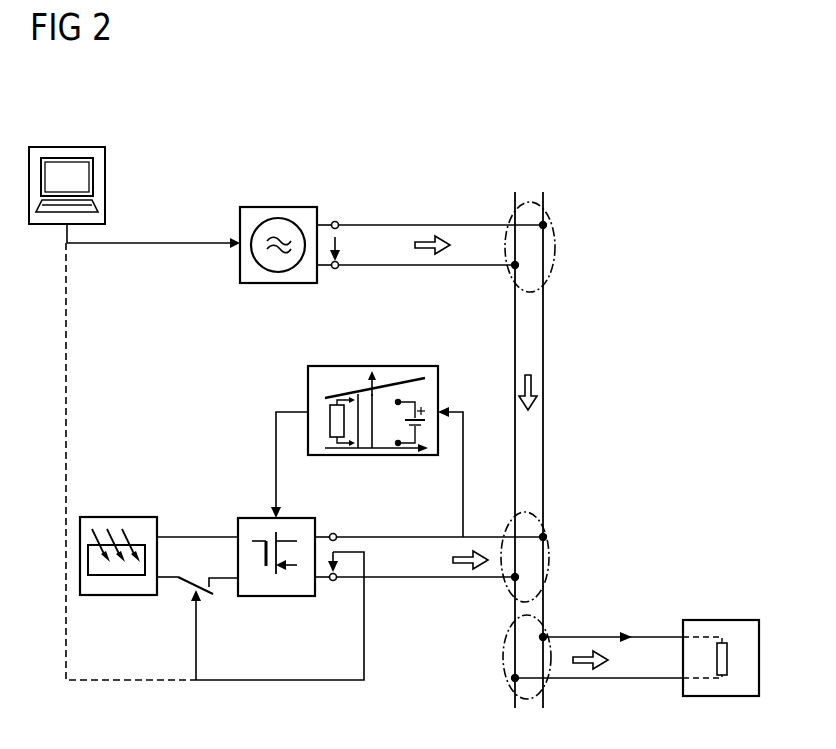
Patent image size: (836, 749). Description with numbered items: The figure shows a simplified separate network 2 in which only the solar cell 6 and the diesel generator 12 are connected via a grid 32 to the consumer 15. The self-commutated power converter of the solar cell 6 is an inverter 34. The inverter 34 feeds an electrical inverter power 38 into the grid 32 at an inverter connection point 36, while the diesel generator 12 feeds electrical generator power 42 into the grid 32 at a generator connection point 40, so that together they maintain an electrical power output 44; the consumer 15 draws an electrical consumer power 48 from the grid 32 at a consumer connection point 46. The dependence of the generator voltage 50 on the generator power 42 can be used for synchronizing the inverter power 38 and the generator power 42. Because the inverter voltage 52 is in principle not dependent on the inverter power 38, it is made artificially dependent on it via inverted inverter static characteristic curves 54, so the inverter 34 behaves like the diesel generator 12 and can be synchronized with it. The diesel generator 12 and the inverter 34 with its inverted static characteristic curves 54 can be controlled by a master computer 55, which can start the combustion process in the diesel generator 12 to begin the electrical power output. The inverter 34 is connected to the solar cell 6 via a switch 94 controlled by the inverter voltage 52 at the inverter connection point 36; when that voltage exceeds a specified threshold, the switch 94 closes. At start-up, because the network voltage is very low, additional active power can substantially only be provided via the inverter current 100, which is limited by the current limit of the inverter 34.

The separate network 2 is at (608, 156).
The solar cell 6 is at (118, 517).
The diesel generator 12 is at (272, 207).
The consumer 15 is at (722, 620).
The grid 32 is at (544, 325).
The inverter 34 is at (278, 597).
The inverter connection point 36 is at (552, 565).
The inverter power 38 is at (463, 568).
The generator connection point 40 is at (556, 250).
The generator power 42 is at (427, 238).
The electrical power output 44 is at (544, 385).
The consumer connection point 46 is at (503, 660).
The consumer power 48 is at (581, 668).
The generator voltage 50 is at (335, 237).
The inverter voltage 52 is at (334, 552).
The inverted inverter static characteristic curves 54 is at (395, 366).
The master computer 55 is at (67, 147).
The switch 94 is at (205, 597).
The inverter current 100 is at (413, 530).